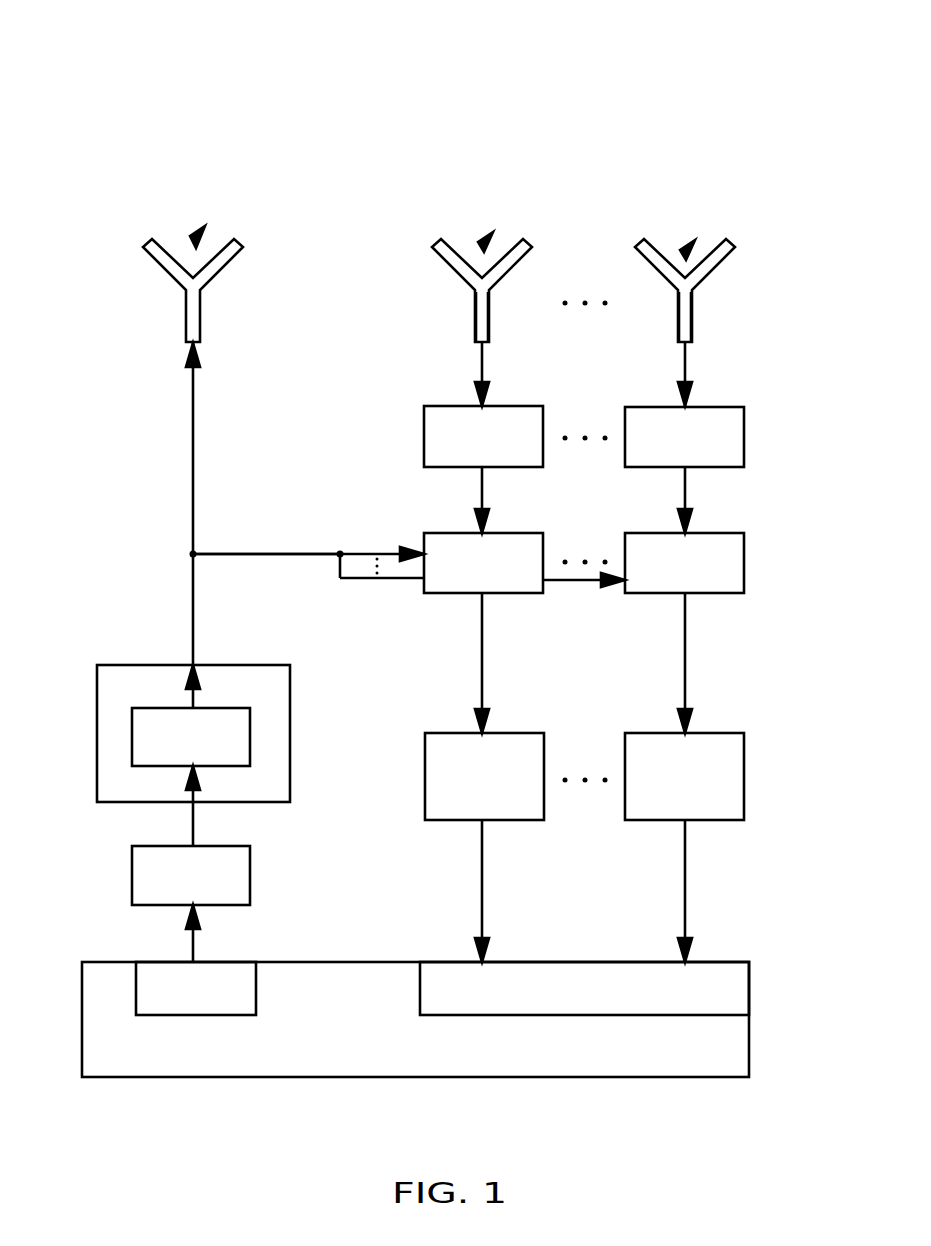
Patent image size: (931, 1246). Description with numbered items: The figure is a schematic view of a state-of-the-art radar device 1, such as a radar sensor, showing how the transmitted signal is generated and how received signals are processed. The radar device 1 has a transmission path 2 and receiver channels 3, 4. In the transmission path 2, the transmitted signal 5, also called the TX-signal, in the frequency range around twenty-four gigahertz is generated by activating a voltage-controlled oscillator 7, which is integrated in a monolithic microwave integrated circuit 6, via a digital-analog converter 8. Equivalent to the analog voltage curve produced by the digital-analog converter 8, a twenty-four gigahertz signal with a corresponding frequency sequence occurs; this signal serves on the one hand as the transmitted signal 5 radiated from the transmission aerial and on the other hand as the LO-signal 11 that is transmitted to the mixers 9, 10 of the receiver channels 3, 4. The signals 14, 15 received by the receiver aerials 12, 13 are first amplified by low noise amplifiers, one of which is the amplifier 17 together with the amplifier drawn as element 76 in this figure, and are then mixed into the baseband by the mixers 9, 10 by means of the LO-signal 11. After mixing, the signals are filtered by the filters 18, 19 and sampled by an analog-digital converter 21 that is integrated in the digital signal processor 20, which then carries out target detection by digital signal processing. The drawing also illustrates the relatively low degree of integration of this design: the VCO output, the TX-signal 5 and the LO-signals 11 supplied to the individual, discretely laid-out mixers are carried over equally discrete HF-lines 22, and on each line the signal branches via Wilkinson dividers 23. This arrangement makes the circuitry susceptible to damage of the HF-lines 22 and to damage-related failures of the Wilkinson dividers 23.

The radar device 1 is at (402, 112).
The transmission path 2 is at (199, 238).
The receiver channel 3 is at (487, 243).
The receiver channel 4 is at (689, 250).
The transmitted signal 5 is at (190, 430).
The monolithic microwave integrated circuit 6 is at (115, 790).
The voltage-controlled oscillator 7 is at (148, 712).
The digital-analog converter 8 is at (138, 876).
The mixer 9 is at (527, 548).
The mixer 10 is at (737, 554).
The LO-signal 11 is at (262, 553).
The receiver aerial 12 is at (478, 308).
The receiver aerial 13 is at (688, 306).
The received signal 14 is at (481, 362).
The received signal 15 is at (687, 362).
The amplifier 17 is at (735, 436).
The filter 18 is at (430, 789).
The filter 19 is at (740, 792).
The digital signal processor 20 is at (360, 1062).
The analog-digital converter 21 is at (722, 970).
The HF-line 22 is at (295, 557).
The Wilkinson divider 23 is at (364, 565).
The low noise amplifier 76 is at (430, 434).